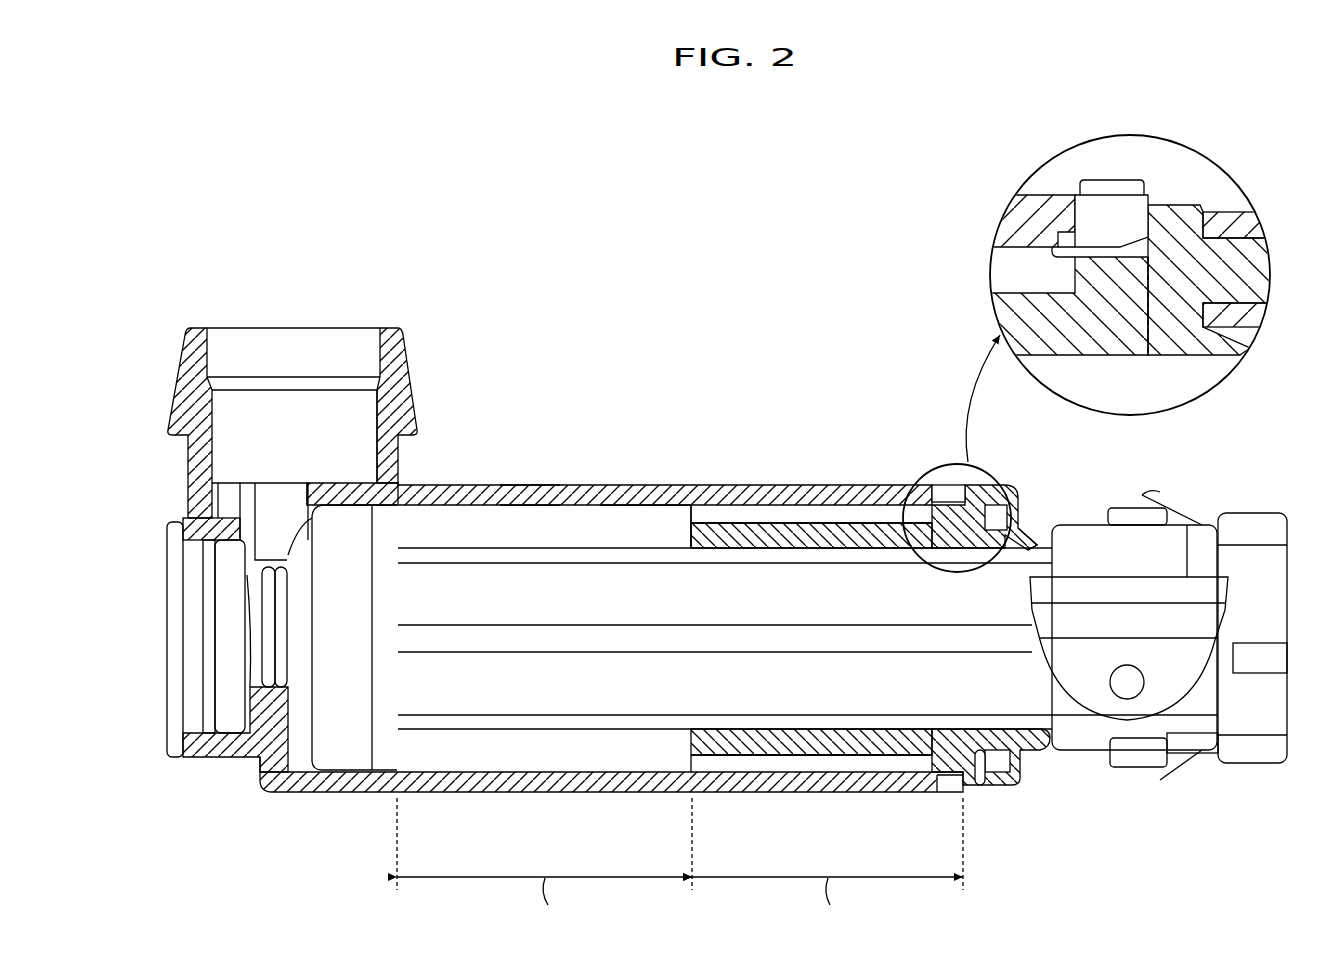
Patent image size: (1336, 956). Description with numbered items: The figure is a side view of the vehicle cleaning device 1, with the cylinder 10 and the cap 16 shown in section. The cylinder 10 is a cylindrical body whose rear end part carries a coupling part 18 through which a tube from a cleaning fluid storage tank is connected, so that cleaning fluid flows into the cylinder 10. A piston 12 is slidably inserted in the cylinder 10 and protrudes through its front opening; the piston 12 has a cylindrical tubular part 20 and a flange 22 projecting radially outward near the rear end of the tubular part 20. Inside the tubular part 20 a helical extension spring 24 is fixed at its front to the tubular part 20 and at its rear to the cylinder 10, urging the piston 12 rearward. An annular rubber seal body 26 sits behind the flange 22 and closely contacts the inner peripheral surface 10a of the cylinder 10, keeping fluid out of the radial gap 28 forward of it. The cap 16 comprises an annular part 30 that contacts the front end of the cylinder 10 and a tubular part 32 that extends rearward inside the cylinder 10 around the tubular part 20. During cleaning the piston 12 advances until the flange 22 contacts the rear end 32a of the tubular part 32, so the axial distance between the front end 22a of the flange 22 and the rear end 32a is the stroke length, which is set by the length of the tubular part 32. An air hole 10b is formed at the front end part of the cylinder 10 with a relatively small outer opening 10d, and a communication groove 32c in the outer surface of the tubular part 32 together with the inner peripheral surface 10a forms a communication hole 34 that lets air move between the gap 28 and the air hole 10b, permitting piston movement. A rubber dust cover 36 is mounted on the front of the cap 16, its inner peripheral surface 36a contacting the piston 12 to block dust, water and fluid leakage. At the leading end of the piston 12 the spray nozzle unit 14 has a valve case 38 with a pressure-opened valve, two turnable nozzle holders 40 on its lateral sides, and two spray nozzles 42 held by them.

The vehicle cleaning device 1 is at (715, 948).
The cylinder 10 is at (833, 787).
The inner peripheral surface 10a is at (645, 520).
The air hole 10b is at (938, 482).
The opening 10d is at (948, 493).
The piston 12 is at (773, 570).
The spray nozzle unit 14 is at (1169, 632).
The cap 16 is at (970, 482).
The coupling part 18 is at (405, 395).
The tubular part 20 is at (592, 553).
The flange 22 is at (403, 483).
The front end 22a is at (400, 530).
The spring 24 is at (258, 740).
The seal body 26 is at (347, 740).
The gap 28 is at (527, 500).
The annular part 30 is at (993, 492).
The tubular part 32 is at (888, 543).
The rear end 32a is at (675, 535).
The communication groove 32c is at (812, 513).
The communication hole 34 is at (856, 513).
The dust cover 36 is at (1007, 792).
The inner peripheral surface 36a is at (1033, 538).
The valve case 38 is at (1202, 752).
The nozzle holder 40 is at (1098, 698).
The spray nozzle 42 is at (1097, 548).